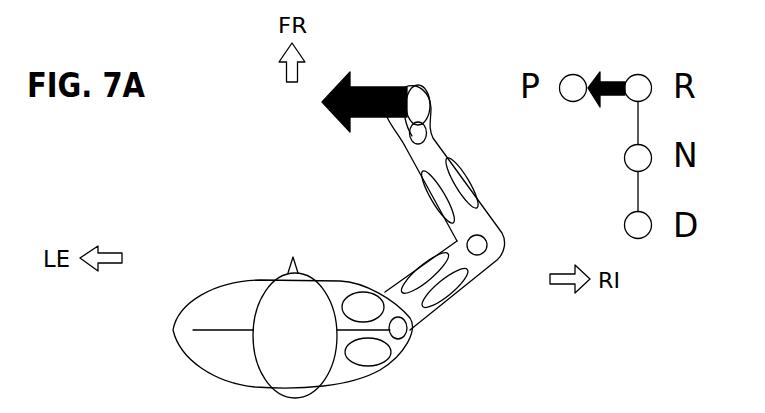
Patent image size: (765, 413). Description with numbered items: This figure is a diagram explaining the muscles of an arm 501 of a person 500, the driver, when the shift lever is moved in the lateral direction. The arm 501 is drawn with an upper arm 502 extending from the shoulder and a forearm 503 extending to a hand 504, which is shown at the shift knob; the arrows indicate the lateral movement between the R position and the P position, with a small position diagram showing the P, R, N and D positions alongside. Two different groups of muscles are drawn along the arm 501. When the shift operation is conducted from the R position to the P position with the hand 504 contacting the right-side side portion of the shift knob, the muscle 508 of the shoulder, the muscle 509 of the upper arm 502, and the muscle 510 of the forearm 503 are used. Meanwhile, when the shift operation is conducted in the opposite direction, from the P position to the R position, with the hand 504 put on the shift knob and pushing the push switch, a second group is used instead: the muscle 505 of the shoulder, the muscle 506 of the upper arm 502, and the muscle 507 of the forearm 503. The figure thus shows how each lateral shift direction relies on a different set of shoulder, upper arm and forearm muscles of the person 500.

The person 500 is at (200, 345).
The arm 501 is at (420, 315).
The upper arm 502 is at (406, 274).
The forearm 503 is at (422, 163).
The hand 504 is at (418, 98).
The muscle of the shoulder 505 is at (373, 357).
The muscle of the upper arm 506 is at (457, 287).
The muscle of the forearm 507 is at (464, 181).
The muscle of the shoulder 508 is at (353, 302).
The muscle of the upper arm 509 is at (430, 260).
The muscle of the forearm 510 is at (428, 186).